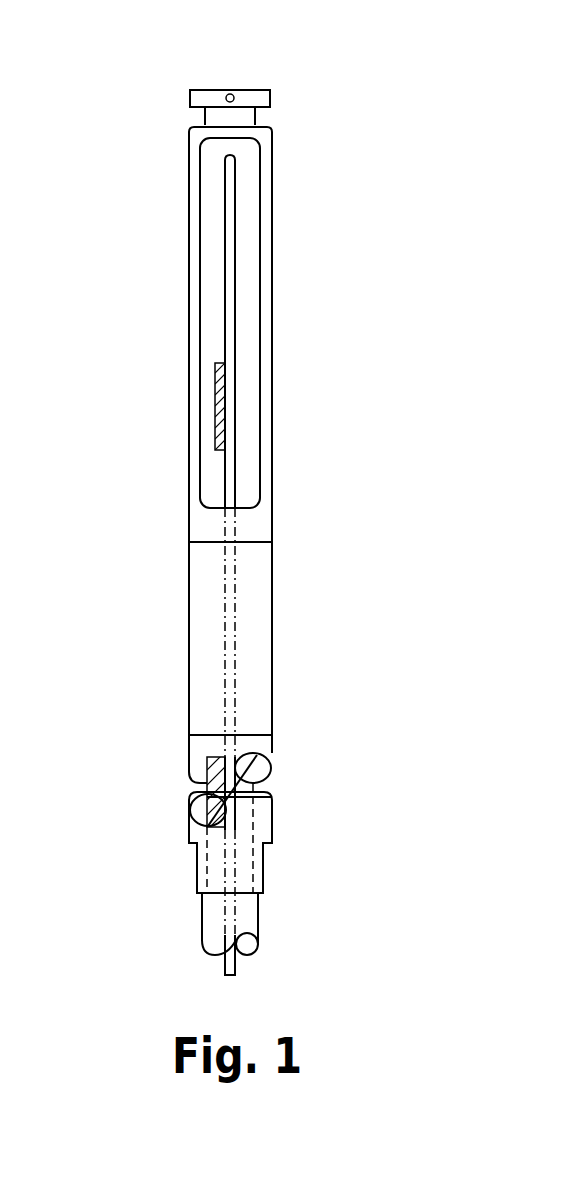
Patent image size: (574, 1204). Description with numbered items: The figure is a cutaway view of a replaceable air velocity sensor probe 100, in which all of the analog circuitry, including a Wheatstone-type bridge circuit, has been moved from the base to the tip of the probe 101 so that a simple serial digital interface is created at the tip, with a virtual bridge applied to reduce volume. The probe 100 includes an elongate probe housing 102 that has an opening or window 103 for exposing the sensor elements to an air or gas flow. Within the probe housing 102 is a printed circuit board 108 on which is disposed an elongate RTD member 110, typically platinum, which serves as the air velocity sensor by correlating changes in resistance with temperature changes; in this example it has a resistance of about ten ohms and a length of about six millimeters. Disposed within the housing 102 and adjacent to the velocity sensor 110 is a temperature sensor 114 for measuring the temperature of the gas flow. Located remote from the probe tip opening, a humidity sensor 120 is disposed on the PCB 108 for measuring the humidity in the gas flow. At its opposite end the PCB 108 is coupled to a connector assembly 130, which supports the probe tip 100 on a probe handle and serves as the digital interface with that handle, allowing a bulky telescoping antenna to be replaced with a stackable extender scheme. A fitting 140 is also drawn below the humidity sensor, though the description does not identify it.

The replaceable air velocity sensor probe 100 is at (146, 22).
The probe 101 is at (271, 92).
The probe housing 102 is at (189, 133).
The opening or window 103 is at (256, 142).
The printed circuit board 108 is at (225, 270).
The elongate RTD member 110 is at (226, 175).
The temperature sensor 114 is at (215, 393).
The humidity sensor 120 is at (207, 790).
The connector assembly 130 is at (225, 925).
The fitting 140 is at (197, 865).